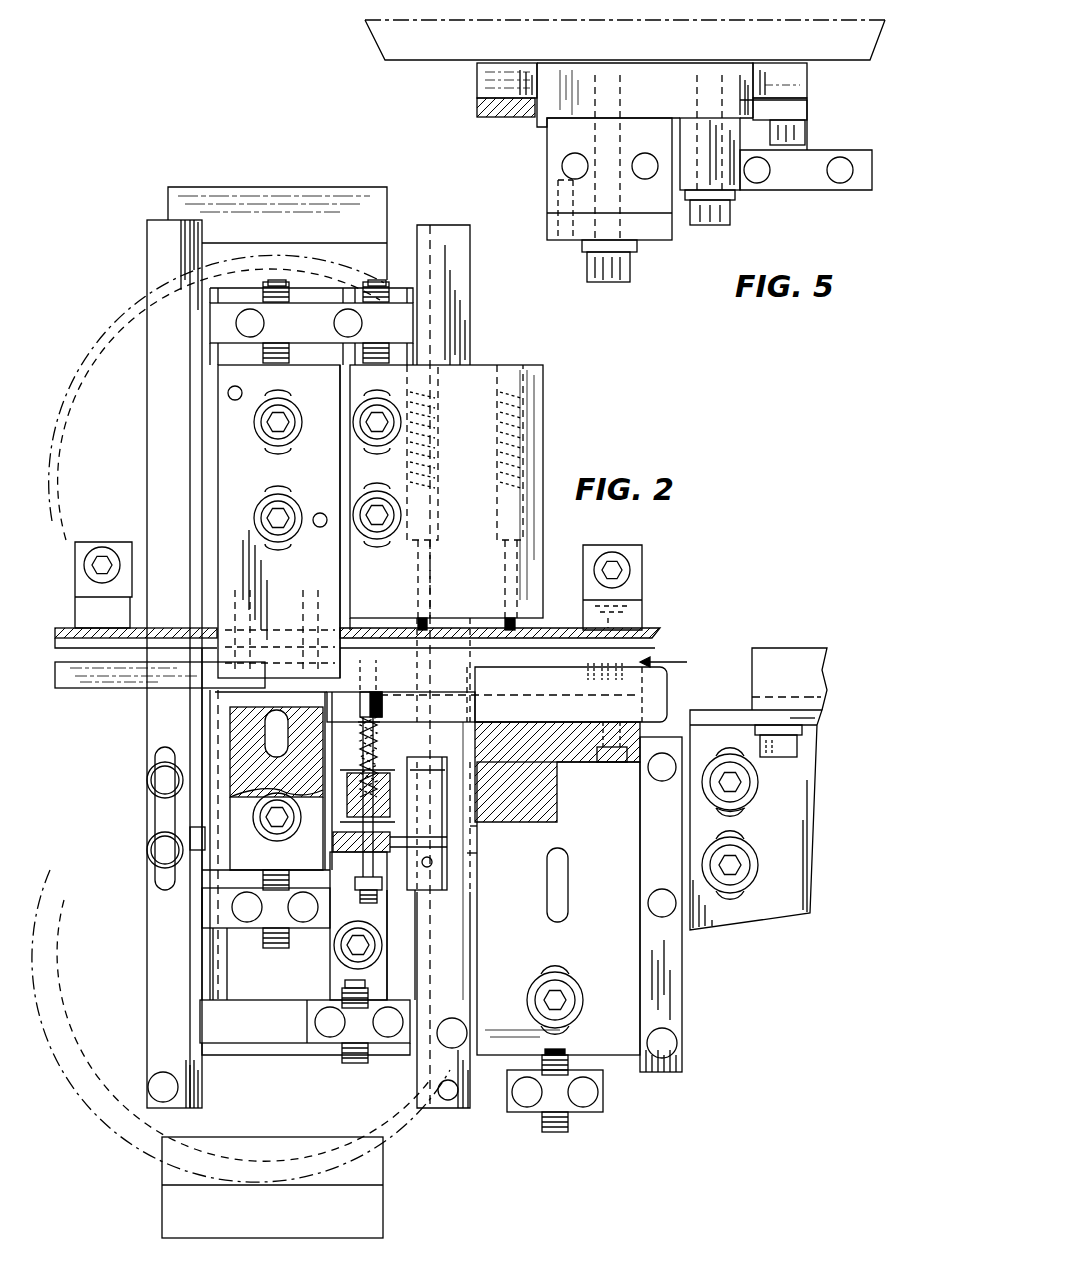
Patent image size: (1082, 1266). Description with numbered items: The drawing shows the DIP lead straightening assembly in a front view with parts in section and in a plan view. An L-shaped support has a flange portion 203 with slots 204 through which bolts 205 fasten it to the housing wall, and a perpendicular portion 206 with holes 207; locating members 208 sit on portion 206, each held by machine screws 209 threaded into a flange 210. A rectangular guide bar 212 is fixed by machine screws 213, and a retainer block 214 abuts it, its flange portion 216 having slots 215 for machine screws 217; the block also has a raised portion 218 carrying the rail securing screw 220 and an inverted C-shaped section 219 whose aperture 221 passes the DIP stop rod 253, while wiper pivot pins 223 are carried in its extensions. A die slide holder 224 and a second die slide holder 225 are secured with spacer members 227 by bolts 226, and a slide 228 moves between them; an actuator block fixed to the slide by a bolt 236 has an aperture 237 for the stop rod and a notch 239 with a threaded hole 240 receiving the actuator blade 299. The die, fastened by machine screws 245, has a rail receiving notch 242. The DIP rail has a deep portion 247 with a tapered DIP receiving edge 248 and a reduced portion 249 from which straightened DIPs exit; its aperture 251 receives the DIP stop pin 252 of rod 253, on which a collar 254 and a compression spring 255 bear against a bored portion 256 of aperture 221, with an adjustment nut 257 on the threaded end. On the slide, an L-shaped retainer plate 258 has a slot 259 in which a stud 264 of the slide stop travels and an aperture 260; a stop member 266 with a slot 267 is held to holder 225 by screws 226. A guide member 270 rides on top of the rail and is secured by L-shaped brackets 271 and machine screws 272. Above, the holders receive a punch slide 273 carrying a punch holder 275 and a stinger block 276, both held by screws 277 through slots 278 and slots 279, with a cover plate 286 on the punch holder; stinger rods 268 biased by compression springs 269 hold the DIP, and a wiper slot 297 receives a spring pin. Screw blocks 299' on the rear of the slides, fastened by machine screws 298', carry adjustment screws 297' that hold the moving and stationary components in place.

In FIG. 2, the flange portion 203 is at (795, 855).
In FIG. 2, the slots 204 is at (742, 810).
In FIG. 2, the bolts 205 is at (758, 782).
In FIG. 2, the portion 206 is at (822, 712).
In FIG. 2, the holes 207 is at (766, 706).
In FIG. 2, the locating members 208 is at (770, 650).
In FIG. 2, the machine screws 209 is at (798, 750).
In FIG. 2, the flange 210 is at (818, 703).
In FIG. 2, the guide bar 212 is at (682, 994).
In FIG. 2, the machine screws 213 is at (670, 1049).
In FIG. 2, the retainer block 214 is at (486, 1060).
In FIG. 2, the slots 215 is at (572, 888).
In FIG. 2, the flange portion 216 is at (500, 954).
In FIG. 2, the machine screws 217 is at (583, 1000).
In FIG. 2, the raised portion 218 is at (565, 779).
In FIG. 2, the inverted C-shaped section 219 is at (352, 790).
In FIG. 2, the rail securing screw 220 is at (610, 762).
In FIG. 2, the aperture 221 is at (392, 793).
In FIG. 2, the wiper pivot pins 223 is at (472, 836).
In FIG. 2, the die slide holder 224 is at (446, 1108).
In FIG. 5, the die slide holder 224 is at (805, 93).
In FIG. 2, the second die slide holder 225 is at (180, 1110).
In FIG. 5, the second die slide holder 225 is at (495, 72).
In FIG. 2, the bolts 226 is at (158, 1074).
In FIG. 5, the bolts 226 is at (806, 139).
In FIG. 2, the spacer members 227 is at (200, 1092).
In FIG. 5, the spacer members 227 is at (475, 100).
In FIG. 2, the slide 228 is at (236, 1055).
In FIG. 2, the bolt 236 is at (336, 944).
In FIG. 2, the aperture 237 is at (395, 840).
In FIG. 2, the notch 239 is at (418, 866).
In FIG. 2, the threaded hole 240 is at (465, 878).
In FIG. 2, the rail receiving notch 242 is at (270, 720).
In FIG. 2, the machine screws 245 is at (262, 839).
In FIG. 2, the deep portion 247 is at (565, 690).
In FIG. 2, the tapered DIP receiving edge 248 is at (445, 715).
In FIG. 2, the reduced portion 249 is at (82, 690).
In FIG. 2, the aperture 251 is at (378, 673).
In FIG. 2, the DIP stop pin 252 is at (352, 627).
In FIG. 2, the DIP stop rod 253 is at (380, 758).
In FIG. 2, the collar 254 is at (385, 710).
In FIG. 2, the compression spring 255 is at (380, 736).
In FIG. 2, the bored portion 256 is at (365, 798).
In FIG. 2, the adjustment nut 257 is at (356, 883).
In FIG. 2, the retainer plate 258 is at (200, 886).
In FIG. 2, the slot 259 is at (215, 793).
In FIG. 2, the aperture 260 is at (215, 720).
In FIG. 2, the stud 264 is at (148, 830).
In FIG. 2, the stop member 266 is at (200, 910).
In FIG. 2, the slot 267 is at (158, 746).
In FIG. 2, the stinger rod 268 is at (512, 577).
In FIG. 2, the compression spring 269 is at (500, 438).
In FIG. 2, the guide member 270 is at (72, 627).
In FIG. 2, the L-shaped brackets 271 is at (80, 577).
In FIG. 2, the machine screws 272 is at (120, 548).
In FIG. 5, the punch slide 273 is at (658, 109).
In FIG. 5, the punch holder 275 is at (547, 173).
In FIG. 2, the stinger block 276 is at (455, 404).
In FIG. 5, the stinger block 276 is at (800, 190).
In FIG. 2, the screws 277 is at (362, 400).
In FIG. 5, the screws 277 is at (718, 226).
In FIG. 5, the slots 278 is at (600, 222).
In FIG. 5, the slots 279 is at (725, 180).
In FIG. 2, the cover plate 286 is at (292, 575).
In FIG. 2, the slot 297 is at (276, 909).
In FIG. 2, the adjustment screw 297' is at (387, 680).
In FIG. 2, the machine screws 298' is at (306, 673).
In FIG. 2, the actuator blade 299 is at (489, 854).
In FIG. 2, the screw blocks 299' is at (439, 691).